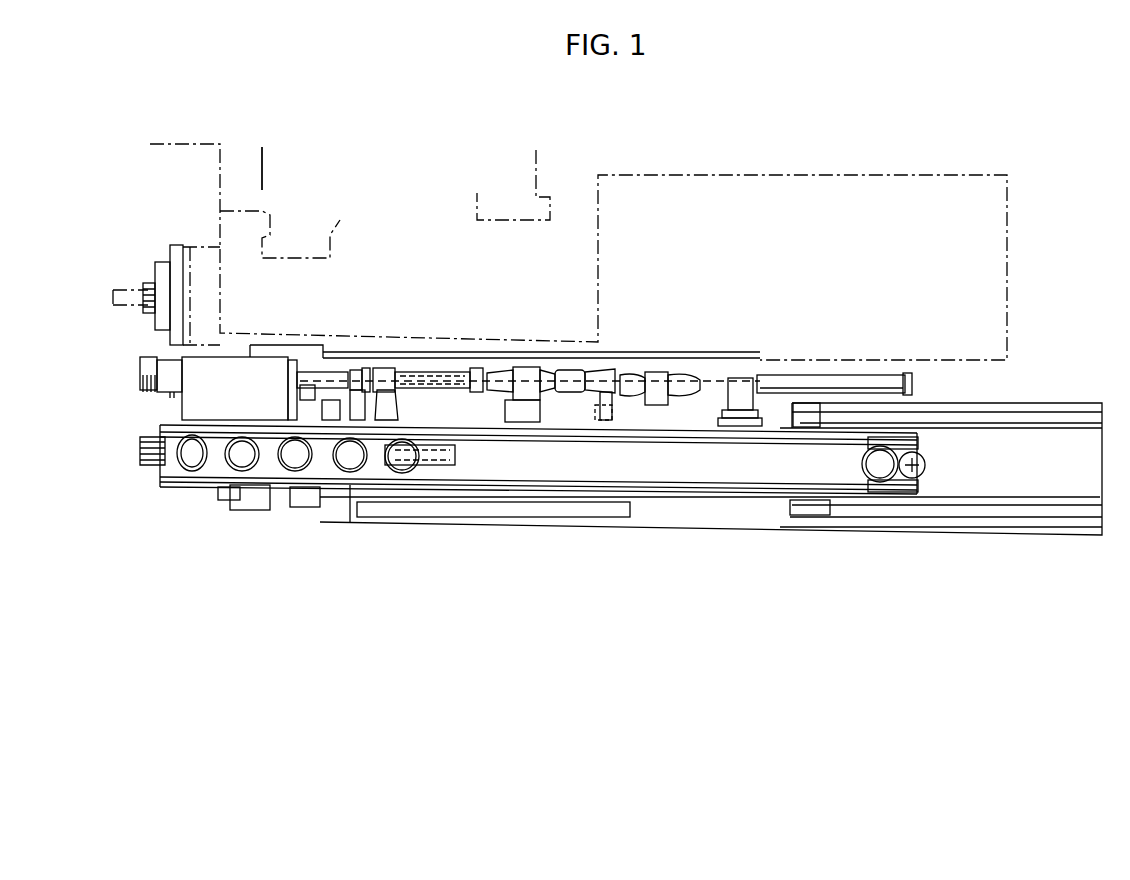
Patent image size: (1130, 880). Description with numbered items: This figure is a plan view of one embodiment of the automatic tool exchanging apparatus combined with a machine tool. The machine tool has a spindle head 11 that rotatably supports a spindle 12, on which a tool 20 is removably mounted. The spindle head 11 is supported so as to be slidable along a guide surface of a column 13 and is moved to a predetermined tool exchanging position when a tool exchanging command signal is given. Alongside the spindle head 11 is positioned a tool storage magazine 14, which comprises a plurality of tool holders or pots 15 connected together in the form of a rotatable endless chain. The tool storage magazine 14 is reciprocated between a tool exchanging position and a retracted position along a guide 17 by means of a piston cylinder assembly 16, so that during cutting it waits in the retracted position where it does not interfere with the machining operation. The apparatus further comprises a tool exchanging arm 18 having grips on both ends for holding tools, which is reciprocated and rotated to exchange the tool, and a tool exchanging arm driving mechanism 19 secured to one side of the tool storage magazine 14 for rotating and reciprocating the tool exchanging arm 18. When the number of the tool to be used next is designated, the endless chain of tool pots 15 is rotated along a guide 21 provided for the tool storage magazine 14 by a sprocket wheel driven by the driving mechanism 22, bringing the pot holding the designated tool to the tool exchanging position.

The spindle head 11 is at (233, 240).
The spindle 12 is at (163, 275).
The column 13 is at (262, 188).
The tool storage magazine 14 is at (335, 478).
The tool holders or pots 15 is at (178, 470).
The piston cylinder assembly 16 is at (912, 386).
The guide 17 is at (1075, 420).
The tool exchanging arm 18 is at (143, 368).
The tool exchanging arm driving mechanism 19 is at (195, 410).
The tool 20 is at (123, 290).
The guide 21 is at (572, 488).
The driving mechanism 22 is at (745, 380).